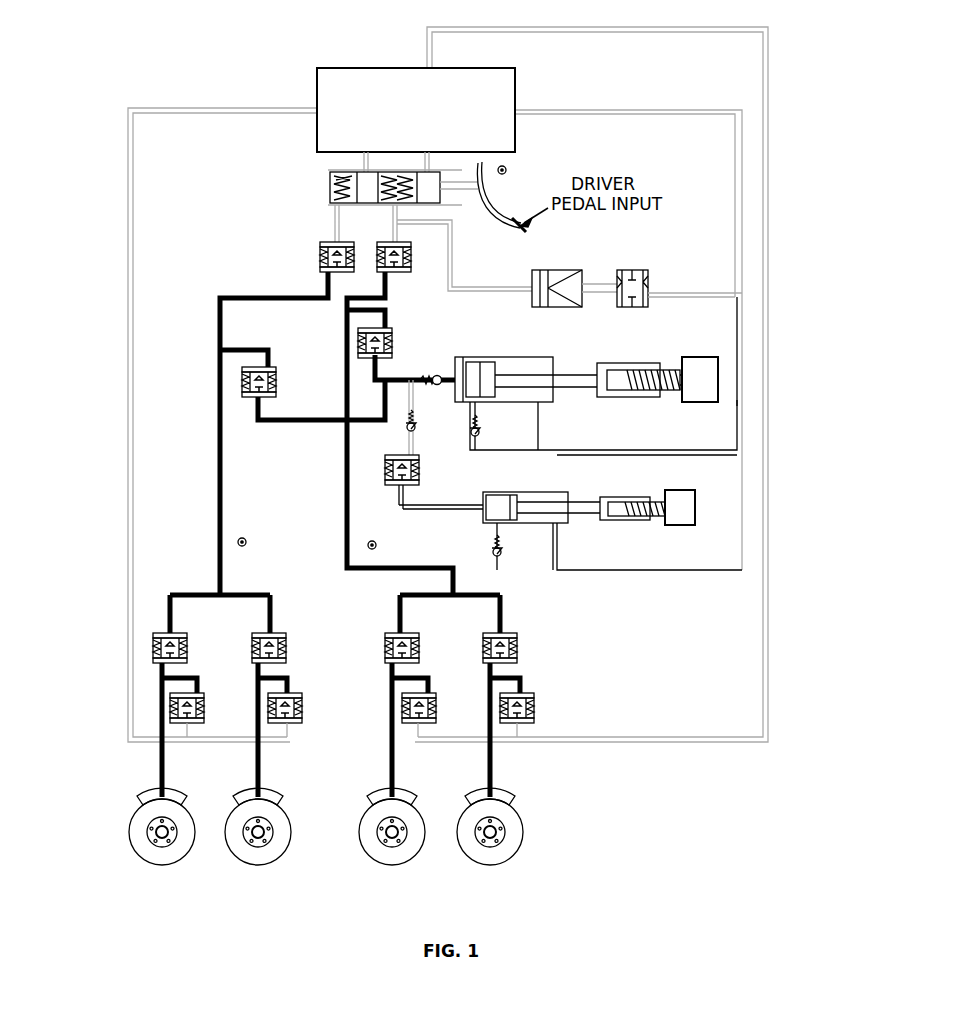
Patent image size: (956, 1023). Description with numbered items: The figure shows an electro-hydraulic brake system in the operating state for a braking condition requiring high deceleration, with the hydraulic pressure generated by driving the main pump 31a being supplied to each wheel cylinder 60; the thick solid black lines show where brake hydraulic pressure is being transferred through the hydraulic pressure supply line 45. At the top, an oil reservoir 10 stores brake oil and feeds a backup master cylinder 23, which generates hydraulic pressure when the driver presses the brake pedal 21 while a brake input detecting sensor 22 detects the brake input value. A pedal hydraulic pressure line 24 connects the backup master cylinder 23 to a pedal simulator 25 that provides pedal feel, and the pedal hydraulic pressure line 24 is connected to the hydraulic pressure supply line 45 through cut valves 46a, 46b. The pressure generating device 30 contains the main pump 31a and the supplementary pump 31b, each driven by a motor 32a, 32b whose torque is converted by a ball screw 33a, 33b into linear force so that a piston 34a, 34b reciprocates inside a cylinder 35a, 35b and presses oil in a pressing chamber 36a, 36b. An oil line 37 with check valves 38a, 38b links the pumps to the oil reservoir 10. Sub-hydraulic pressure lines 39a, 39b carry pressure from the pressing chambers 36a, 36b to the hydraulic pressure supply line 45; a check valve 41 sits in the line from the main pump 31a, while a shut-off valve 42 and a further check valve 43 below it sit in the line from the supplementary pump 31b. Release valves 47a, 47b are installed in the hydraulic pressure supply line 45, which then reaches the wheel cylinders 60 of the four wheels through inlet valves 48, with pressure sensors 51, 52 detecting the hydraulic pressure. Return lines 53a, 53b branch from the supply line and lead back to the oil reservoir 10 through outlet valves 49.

The oil reservoir 10 is at (343, 66).
The brake pedal 21 is at (504, 213).
The brake input detecting sensor 22 is at (508, 170).
The backup master cylinder 23 is at (330, 187).
The pedal hydraulic pressure line 24 is at (395, 222).
The pedal simulator 25 is at (572, 262).
The pressure generating device 30 is at (710, 433).
The main pump 31a is at (604, 364).
The supplementary pump 31b is at (607, 497).
The motor 32a is at (718, 373).
The motor 32b is at (695, 508).
The ball screw 33a is at (651, 392).
The ball screw 33b is at (640, 520).
The piston 34a is at (540, 375).
The piston 34b is at (555, 505).
The cylinder 35a is at (515, 357).
The cylinder 35b is at (533, 492).
The pressing chamber 36a is at (466, 362).
The pressing chamber 36b is at (486, 518).
The oil line 37 is at (742, 403).
The check valve 38a is at (482, 431).
The check valve 38b is at (504, 549).
The sub-hydraulic pressure line 39a is at (437, 375).
The sub-hydraulic pressure line 39b is at (440, 503).
The check valve 41 is at (416, 392).
The shut-off valve 42 is at (385, 483).
The check valve 43 is at (406, 427).
The hydraulic pressure supply line 45 is at (209, 440).
The cut valve 46a is at (320, 257).
The cut valve 46b is at (412, 257).
The release valve 47a is at (276, 381).
The release valve 47b is at (395, 340).
The inlet valve 48 is at (155, 632).
The outlet valve 49 is at (205, 700).
The pressure sensor 51 is at (248, 542).
The pressure sensor 52 is at (378, 545).
The return line 53a is at (128, 466).
The return line 53b is at (770, 568).
The wheel cylinder 60 is at (148, 800).